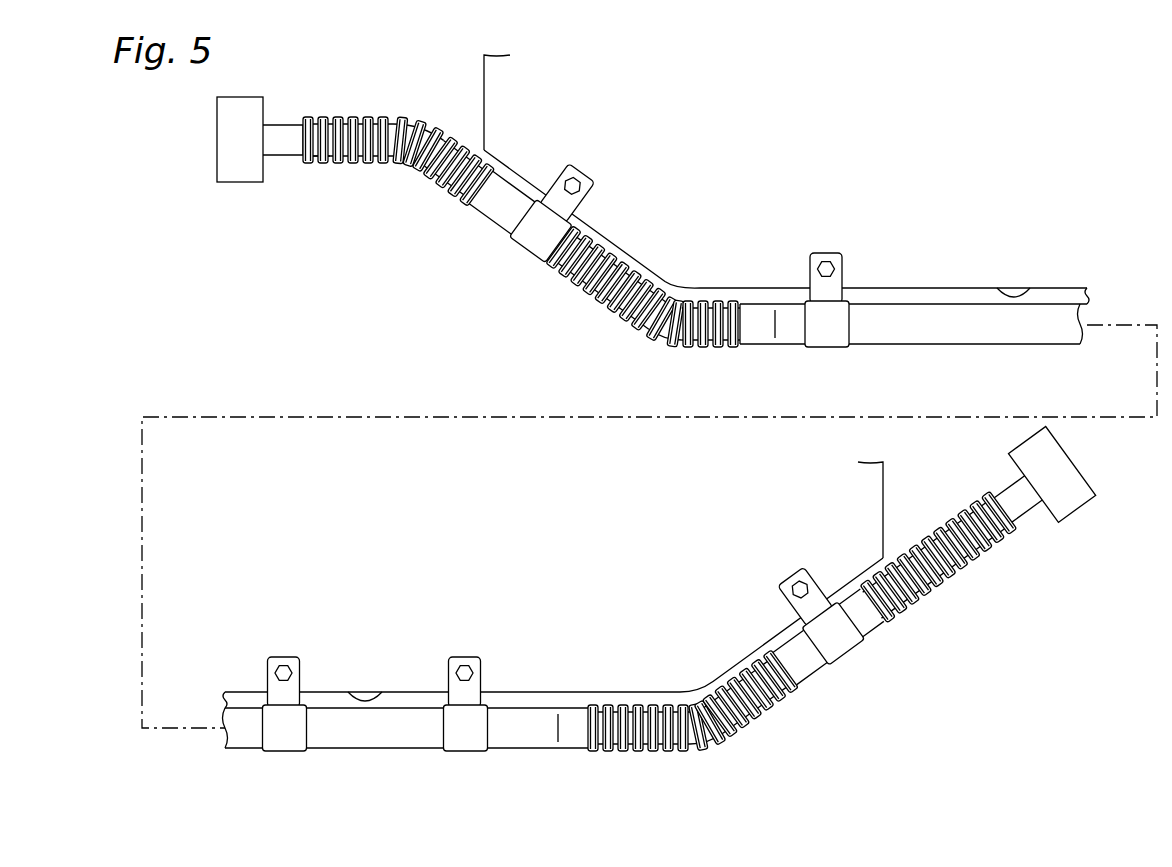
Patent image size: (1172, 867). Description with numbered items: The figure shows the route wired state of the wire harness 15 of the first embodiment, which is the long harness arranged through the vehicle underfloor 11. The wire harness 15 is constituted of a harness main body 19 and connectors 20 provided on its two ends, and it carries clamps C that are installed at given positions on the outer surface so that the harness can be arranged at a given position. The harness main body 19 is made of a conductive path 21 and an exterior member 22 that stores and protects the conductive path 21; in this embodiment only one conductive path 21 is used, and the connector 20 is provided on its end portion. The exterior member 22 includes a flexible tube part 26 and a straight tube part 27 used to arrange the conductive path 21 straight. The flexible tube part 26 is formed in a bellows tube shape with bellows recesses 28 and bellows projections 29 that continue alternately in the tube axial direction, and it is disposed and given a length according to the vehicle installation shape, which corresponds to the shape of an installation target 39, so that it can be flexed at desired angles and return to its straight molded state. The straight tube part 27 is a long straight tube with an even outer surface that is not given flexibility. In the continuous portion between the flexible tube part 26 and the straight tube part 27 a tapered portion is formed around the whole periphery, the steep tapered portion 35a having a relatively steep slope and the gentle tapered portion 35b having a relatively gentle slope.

The vehicle underfloor 11 is at (1030, 288).
The wire harness 15 is at (453, 278).
The harness main body 19 is at (928, 352).
The connector 20 is at (245, 180).
The conductive path 21 is at (287, 130).
The exterior member 22 is at (1055, 313).
The flexible tube part 26 is at (367, 117).
The straight tube part 27 is at (590, 222).
The bellows recess 28 is at (305, 160).
The bellows projection 29 is at (318, 163).
The tapered portion having a relatively steep slope 35a is at (456, 204).
The tapered portion having a relatively gentle slope 35b is at (763, 306).
The installation target 39 is at (483, 113).
The clamp C is at (530, 248).